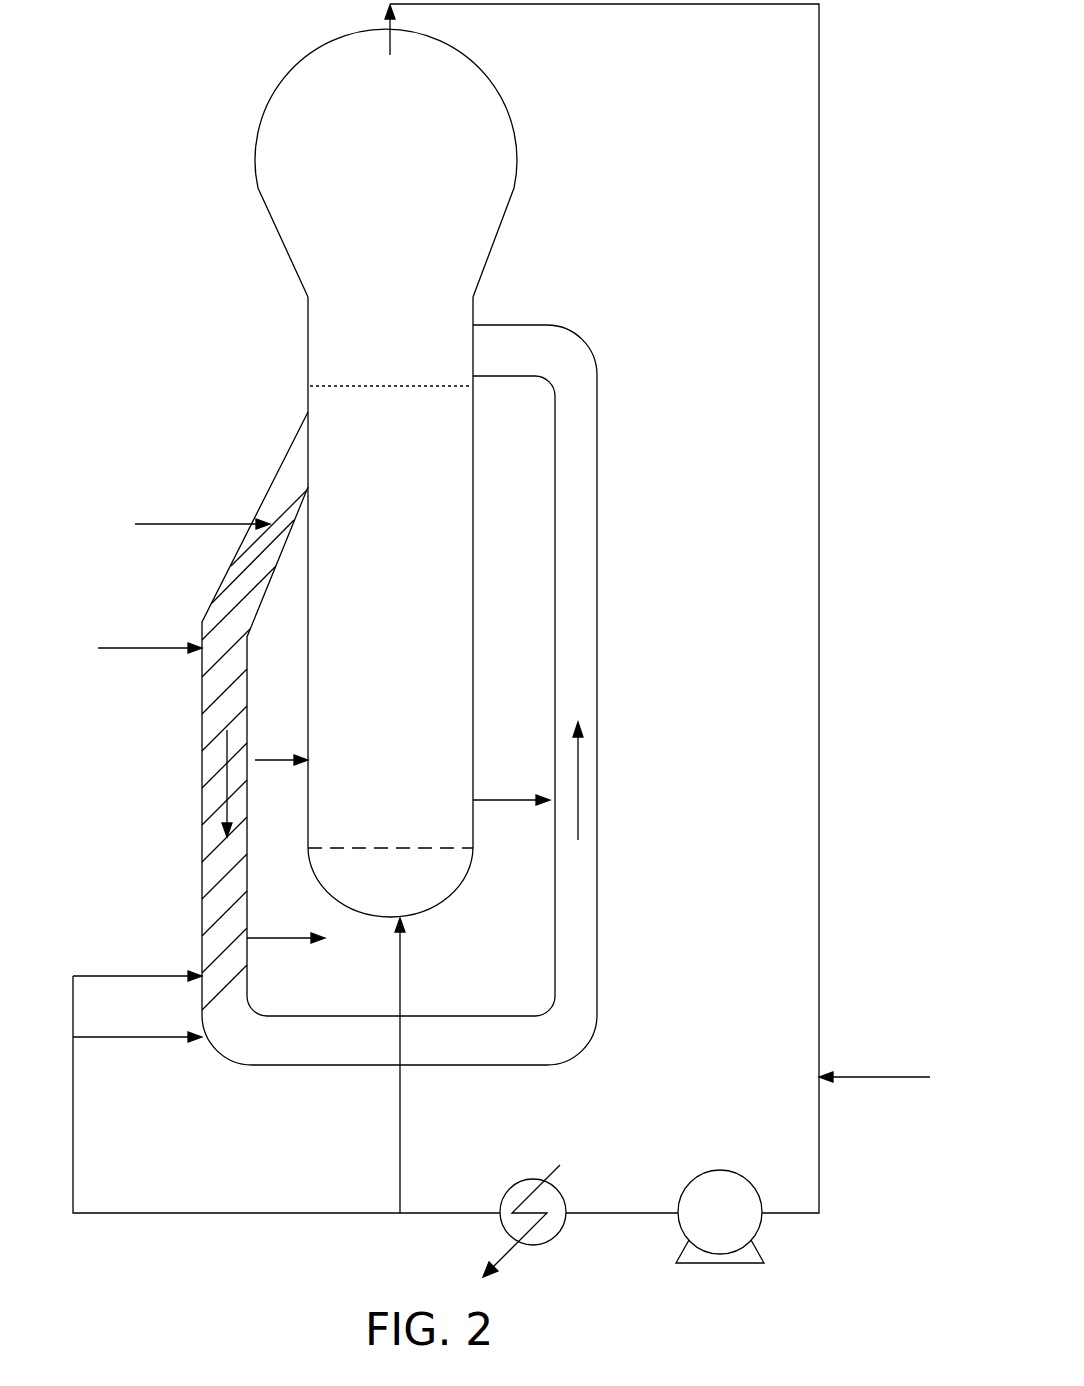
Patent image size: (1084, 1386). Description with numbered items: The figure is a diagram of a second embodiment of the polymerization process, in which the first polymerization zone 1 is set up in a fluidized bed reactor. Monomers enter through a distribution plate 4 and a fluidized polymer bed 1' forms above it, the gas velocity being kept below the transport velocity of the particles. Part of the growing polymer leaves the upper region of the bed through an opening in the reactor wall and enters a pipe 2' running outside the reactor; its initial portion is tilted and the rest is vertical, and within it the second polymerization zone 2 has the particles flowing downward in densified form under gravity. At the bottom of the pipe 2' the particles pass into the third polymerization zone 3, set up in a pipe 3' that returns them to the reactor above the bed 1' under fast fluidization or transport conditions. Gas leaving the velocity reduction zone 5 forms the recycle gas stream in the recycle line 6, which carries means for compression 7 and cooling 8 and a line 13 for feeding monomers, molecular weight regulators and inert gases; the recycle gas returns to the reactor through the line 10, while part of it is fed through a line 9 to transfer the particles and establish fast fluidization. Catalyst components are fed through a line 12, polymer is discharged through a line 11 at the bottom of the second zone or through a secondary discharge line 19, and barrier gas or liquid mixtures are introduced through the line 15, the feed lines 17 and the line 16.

The first polymerization zone 1 is at (397, 622).
The fluidized polymer bed 1' is at (497, 607).
The second polymerization zone 2 is at (225, 759).
The pipe 2' is at (196, 750).
The third polymerization zone 3 is at (580, 809).
The pipe 3' is at (460, 695).
The distribution plate 4 is at (345, 848).
The velocity reduction zone 5 is at (338, 140).
The recycle line 6 is at (819, 541).
The means for the compression 7 is at (715, 1170).
The cooling means 8 is at (530, 1178).
The line 9 is at (170, 1037).
The line 10 is at (400, 1120).
The discharge line 11 is at (270, 938).
The line 12 is at (283, 760).
The line 13 is at (855, 1077).
The line 15 is at (158, 523).
The line 16 is at (120, 976).
The feed lines 17 is at (158, 655).
The discharge line 19 is at (493, 800).